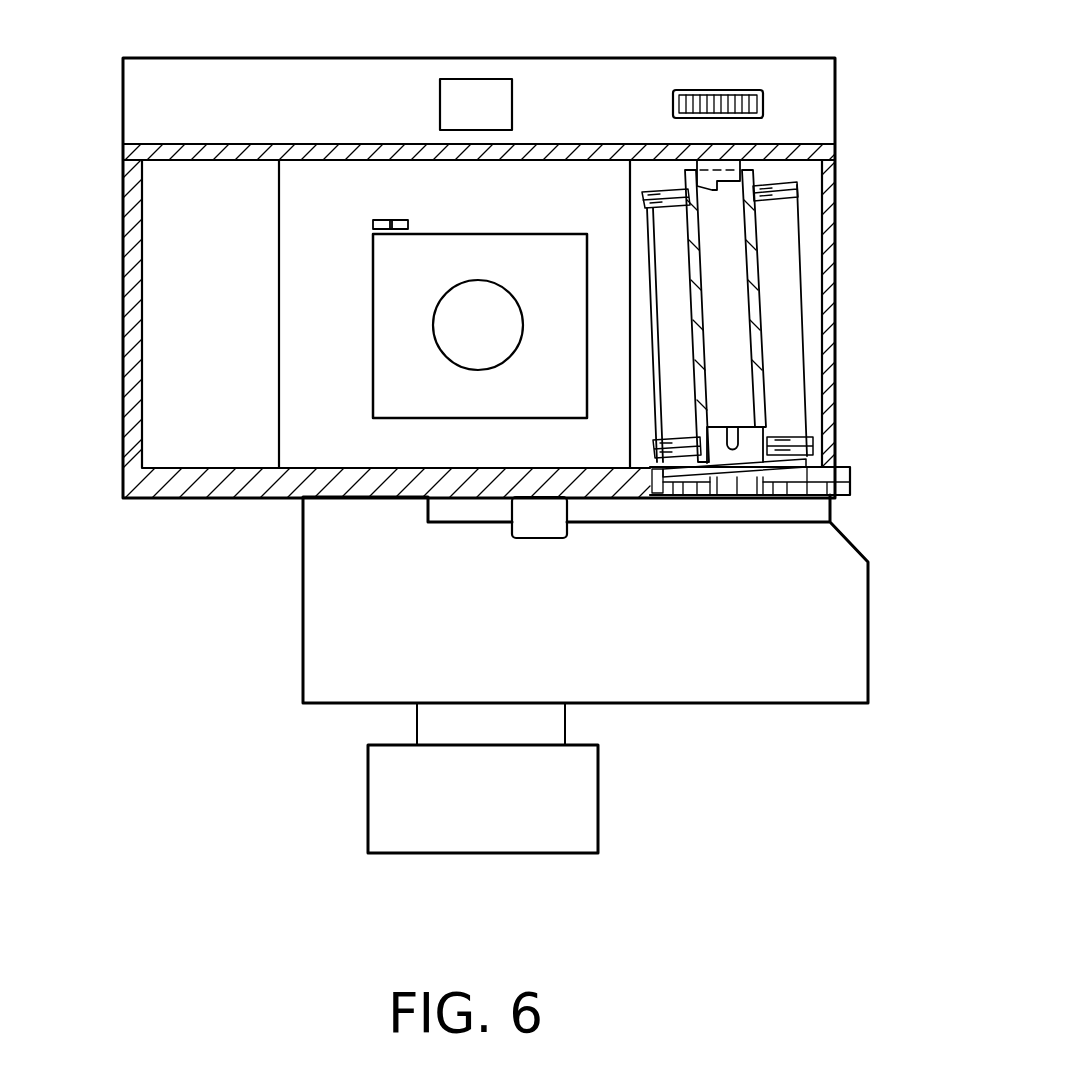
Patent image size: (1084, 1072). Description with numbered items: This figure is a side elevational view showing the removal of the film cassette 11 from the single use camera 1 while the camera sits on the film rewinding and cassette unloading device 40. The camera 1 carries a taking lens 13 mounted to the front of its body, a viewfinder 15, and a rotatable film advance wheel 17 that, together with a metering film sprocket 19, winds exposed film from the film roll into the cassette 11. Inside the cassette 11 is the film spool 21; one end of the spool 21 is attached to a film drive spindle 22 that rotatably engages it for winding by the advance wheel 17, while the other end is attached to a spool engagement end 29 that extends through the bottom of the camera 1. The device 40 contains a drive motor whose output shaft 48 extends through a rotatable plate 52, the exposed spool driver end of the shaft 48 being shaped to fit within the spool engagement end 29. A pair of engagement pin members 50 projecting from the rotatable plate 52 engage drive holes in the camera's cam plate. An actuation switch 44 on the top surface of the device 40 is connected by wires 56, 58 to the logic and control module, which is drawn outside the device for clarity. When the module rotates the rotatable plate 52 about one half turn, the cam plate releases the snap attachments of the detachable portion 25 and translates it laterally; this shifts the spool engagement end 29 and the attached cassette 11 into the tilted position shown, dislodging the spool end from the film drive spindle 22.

The single use camera 1 is at (123, 352).
The film cassette 11 is at (780, 228).
The taking lens 13 is at (453, 341).
The viewfinder 15 is at (472, 92).
The film advance wheel 17 is at (690, 90).
The film sprocket 19 is at (373, 222).
The film spool 21 is at (738, 310).
The film drive spindle 22 is at (733, 165).
The detachable portion 25 is at (850, 477).
The spool engagement end 29 is at (752, 440).
The film rewinding and cassette unloading device 40 is at (683, 680).
The actuation switch 44 is at (532, 525).
The output shaft 48 is at (727, 482).
The engagement pin members 50 is at (784, 492).
The rotatable plate 52 is at (681, 509).
The wire 56 is at (417, 721).
The wire 58 is at (567, 722).